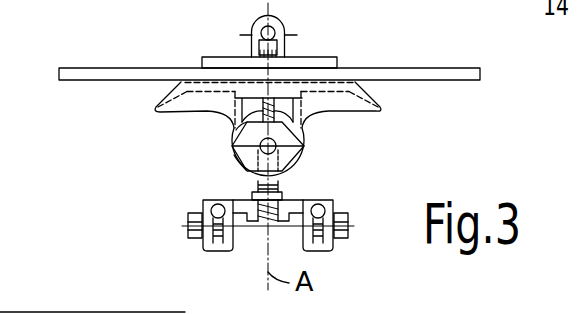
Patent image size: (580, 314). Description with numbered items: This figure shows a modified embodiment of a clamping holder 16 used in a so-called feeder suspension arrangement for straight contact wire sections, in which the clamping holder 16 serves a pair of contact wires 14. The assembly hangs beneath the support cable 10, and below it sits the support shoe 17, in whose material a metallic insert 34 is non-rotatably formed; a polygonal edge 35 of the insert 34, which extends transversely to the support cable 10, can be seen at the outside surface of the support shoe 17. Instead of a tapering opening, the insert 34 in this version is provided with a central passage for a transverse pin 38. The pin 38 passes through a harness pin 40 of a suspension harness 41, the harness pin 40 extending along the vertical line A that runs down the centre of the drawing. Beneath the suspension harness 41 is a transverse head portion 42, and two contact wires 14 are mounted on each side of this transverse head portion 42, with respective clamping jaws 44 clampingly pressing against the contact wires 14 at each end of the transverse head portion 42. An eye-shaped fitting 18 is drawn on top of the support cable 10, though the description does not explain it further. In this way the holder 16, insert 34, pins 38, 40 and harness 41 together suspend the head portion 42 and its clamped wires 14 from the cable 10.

The support cable 10 is at (437, 60).
The contact wires 14 is at (207, 198).
The clamping holder 16 is at (208, 52).
The support shoe 17 is at (354, 72).
The cap / eye bolt 18 is at (314, 63).
The metal insert 34 is at (284, 139).
The polygonal edge 35 is at (300, 157).
The transverse pin 38 is at (246, 139).
The harness pin 40 is at (241, 153).
The suspension harness 41 is at (178, 242).
The transverse head portion 42 is at (312, 252).
The clamping jaws 44 is at (208, 246).